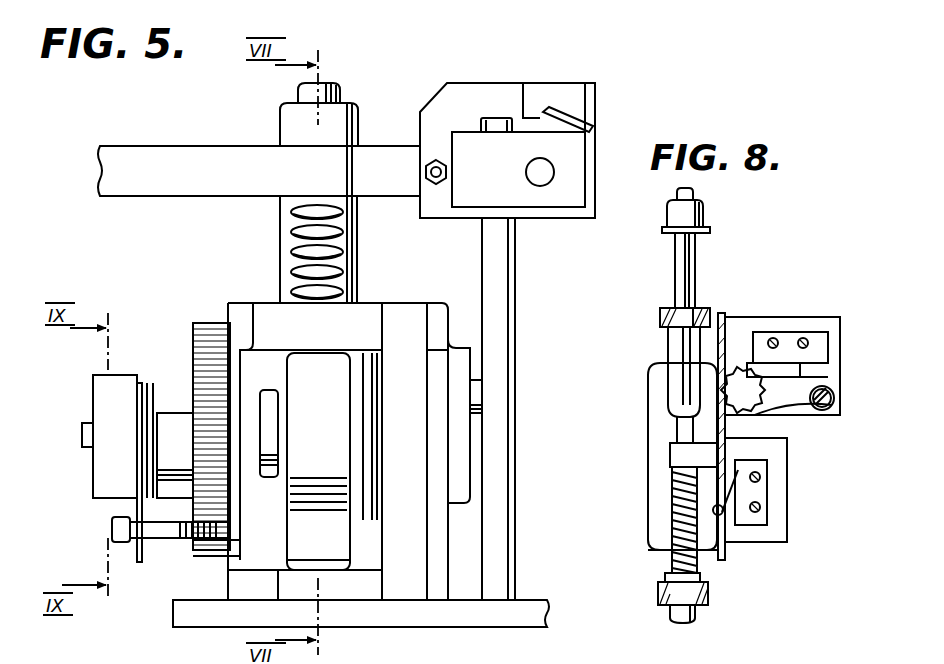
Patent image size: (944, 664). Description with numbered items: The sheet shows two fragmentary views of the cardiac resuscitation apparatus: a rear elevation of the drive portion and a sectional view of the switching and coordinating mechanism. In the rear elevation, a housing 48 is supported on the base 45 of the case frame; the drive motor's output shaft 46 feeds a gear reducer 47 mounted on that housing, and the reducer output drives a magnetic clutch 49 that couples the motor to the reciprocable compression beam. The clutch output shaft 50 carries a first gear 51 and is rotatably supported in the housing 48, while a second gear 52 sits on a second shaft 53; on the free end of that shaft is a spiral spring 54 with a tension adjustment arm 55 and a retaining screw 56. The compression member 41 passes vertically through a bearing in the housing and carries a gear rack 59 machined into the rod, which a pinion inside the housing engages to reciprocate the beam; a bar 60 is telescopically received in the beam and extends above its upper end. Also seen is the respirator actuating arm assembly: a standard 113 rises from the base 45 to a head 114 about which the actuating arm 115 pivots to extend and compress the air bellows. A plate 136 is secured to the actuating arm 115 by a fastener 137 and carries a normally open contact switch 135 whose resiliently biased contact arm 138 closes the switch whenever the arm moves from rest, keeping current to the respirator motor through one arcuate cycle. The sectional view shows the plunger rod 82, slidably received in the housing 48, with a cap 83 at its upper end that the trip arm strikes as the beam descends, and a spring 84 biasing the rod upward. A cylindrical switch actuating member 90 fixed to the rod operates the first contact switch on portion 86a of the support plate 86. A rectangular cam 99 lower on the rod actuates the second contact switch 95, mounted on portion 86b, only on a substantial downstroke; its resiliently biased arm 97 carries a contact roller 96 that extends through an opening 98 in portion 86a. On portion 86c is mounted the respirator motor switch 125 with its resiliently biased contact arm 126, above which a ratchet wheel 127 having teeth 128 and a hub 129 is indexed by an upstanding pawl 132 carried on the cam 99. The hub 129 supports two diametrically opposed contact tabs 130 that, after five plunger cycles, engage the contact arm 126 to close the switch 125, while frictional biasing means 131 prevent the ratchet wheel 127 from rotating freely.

In FIG. 5, the compression member 41 is at (300, 203).
In FIG. 5, the base 45 is at (410, 612).
In FIG. 5, the output shaft 46 is at (478, 392).
In FIG. 5, the gear reducer 47 is at (349, 451).
In FIG. 5, the housing 48 is at (275, 548).
In FIG. 8, the housing 48 is at (668, 310).
In FIG. 5, the magnetic clutch 49 is at (332, 461).
In FIG. 5, the output shaft 50 is at (270, 428).
In FIG. 5, the first gear 51 is at (240, 480).
In FIG. 5, the second gear 52 is at (208, 323).
In FIG. 5, the second shaft 53 is at (84, 428).
In FIG. 5, the spiral spring 54 is at (118, 385).
In FIG. 5, the tension adjustment arm 55 is at (132, 503).
In FIG. 5, the retaining screw 56 is at (140, 545).
In FIG. 5, the gear rack 59 is at (338, 252).
In FIG. 5, the bar 60 is at (337, 96).
In FIG. 5, the standard 113 is at (497, 485).
In FIG. 5, the head 114 is at (466, 132).
In FIG. 5, the actuating arm 115 is at (259, 171).
In FIG. 5, the contact switch 135 is at (550, 95).
In FIG. 5, the plate 136 is at (463, 88).
In FIG. 5, the fastener 137 is at (430, 160).
In FIG. 5, the contact arm 138 is at (575, 120).
In FIG. 8, the plunger rod 82 is at (690, 262).
In FIG. 8, the cap 83 is at (690, 212).
In FIG. 8, the spring 84 is at (670, 565).
In FIG. 8, the support plate 86 is at (797, 447).
In FIG. 8, the support plate portion 86a is at (722, 550).
In FIG. 8, the support plate portion 86b is at (782, 530).
In FIG. 8, the support plate portion 86c is at (838, 325).
In FIG. 8, the switch actuating member 90 is at (680, 343).
In FIG. 8, the second contact switch 95 is at (762, 497).
In FIG. 8, the contact roller 96 is at (712, 510).
In FIG. 8, the arm 97 is at (735, 485).
In FIG. 8, the opening 98 is at (730, 530).
In FIG. 8, the cam 99 is at (680, 452).
In FIG. 8, the electrical contact switch 125 is at (760, 335).
In FIG. 8, the contact arm 126 is at (782, 363).
In FIG. 8, the ratchet wheel 127 is at (745, 412).
In FIG. 8, the teeth 128 is at (738, 318).
In FIG. 8, the hub 129 is at (805, 370).
In FIG. 8, the contact tabs 130 is at (730, 325).
In FIG. 8, the frictional biasing means 131 is at (838, 398).
In FIG. 8, the pawl 132 is at (720, 388).